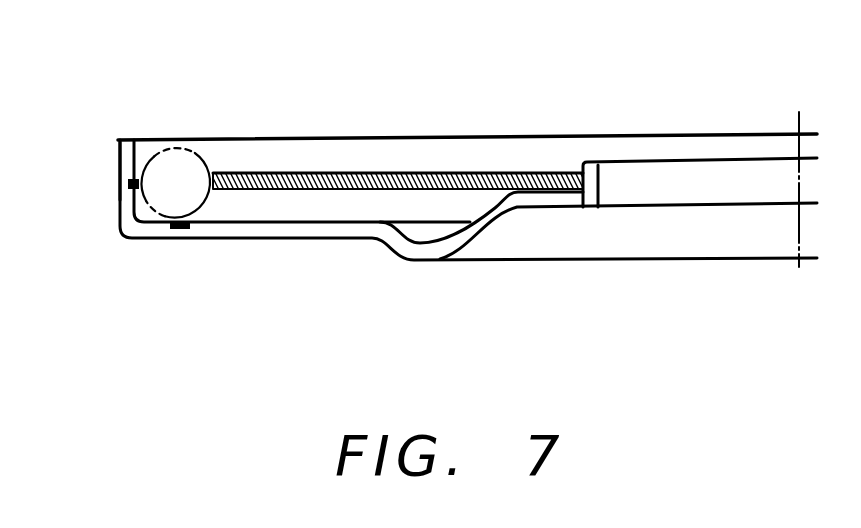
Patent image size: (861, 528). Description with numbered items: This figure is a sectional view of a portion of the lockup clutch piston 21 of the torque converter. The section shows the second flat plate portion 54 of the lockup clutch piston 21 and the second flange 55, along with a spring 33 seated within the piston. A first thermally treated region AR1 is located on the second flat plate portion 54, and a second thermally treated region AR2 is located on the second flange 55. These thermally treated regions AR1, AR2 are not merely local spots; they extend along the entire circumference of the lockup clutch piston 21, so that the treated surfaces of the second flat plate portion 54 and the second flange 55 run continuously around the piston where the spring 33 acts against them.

The lockup clutch piston 21 is at (322, 238).
The second flat plate portion 54 is at (262, 240).
The second flange 55 is at (130, 138).
The spring 33 is at (190, 148).
The second thermally treated region AR2 is at (131, 183).
The first thermally treated region AR1 is at (177, 229).